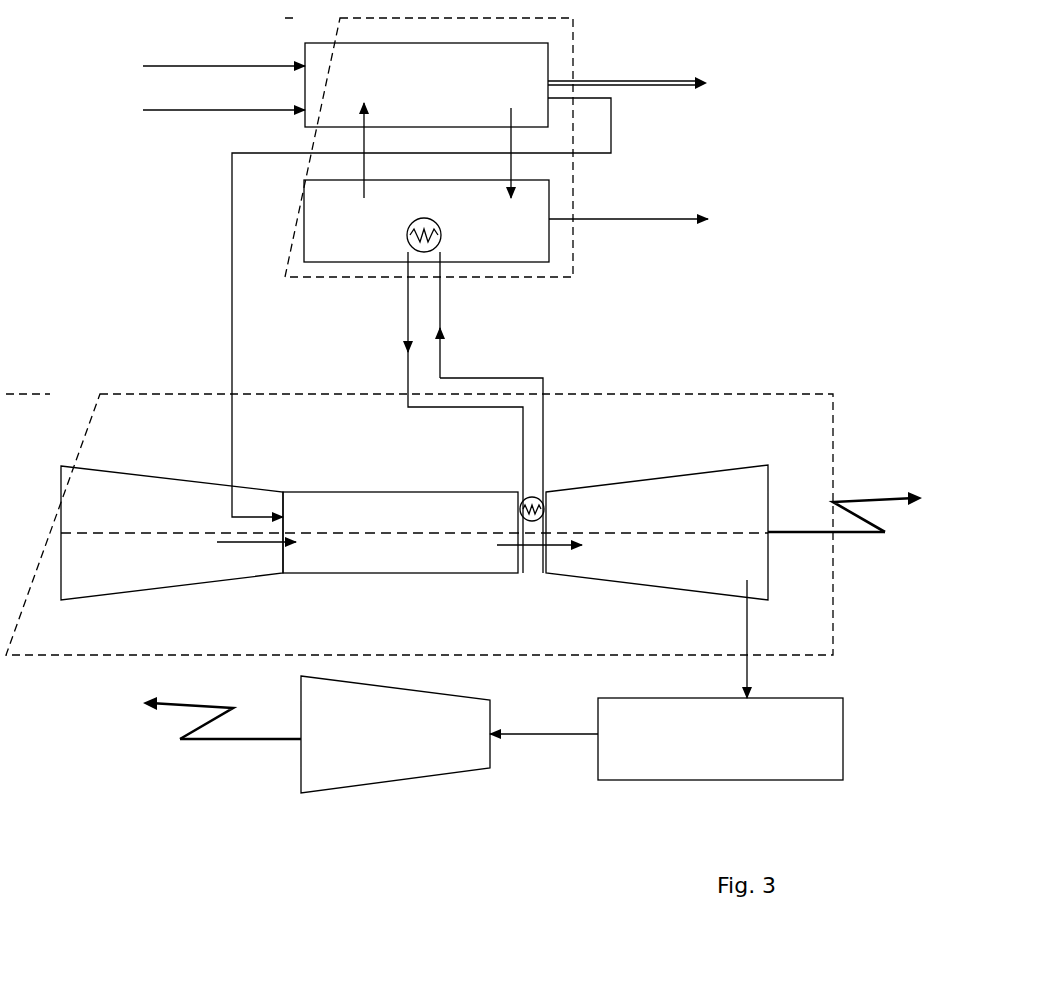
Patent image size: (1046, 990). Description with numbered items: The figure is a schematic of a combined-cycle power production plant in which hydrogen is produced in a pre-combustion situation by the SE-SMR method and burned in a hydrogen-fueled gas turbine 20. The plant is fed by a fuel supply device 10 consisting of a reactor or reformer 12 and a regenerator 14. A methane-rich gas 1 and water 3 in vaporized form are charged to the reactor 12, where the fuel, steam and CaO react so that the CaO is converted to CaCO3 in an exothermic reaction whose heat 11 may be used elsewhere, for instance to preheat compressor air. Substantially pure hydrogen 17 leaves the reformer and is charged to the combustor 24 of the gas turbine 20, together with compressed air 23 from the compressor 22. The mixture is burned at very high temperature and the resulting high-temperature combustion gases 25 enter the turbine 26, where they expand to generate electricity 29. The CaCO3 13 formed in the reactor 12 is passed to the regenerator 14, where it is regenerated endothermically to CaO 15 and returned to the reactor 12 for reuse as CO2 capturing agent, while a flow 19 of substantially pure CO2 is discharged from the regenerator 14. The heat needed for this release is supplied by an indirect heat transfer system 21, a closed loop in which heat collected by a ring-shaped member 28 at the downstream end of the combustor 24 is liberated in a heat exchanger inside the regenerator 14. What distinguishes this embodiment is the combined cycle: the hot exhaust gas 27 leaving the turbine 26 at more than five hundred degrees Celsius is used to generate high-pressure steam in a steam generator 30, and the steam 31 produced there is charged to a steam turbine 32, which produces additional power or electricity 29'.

The methane rich gas 1 is at (224, 53).
The water 3 is at (224, 97).
The fuel supply device 10 is at (429, 142).
The heat 11 is at (627, 73).
The reactor 12 is at (426, 85).
The CaCO3 13 is at (527, 153).
The regenerator 14 is at (426, 221).
The CaO 15 is at (380, 150).
The hydrogen 17 is at (408, 307).
The flow of substantially pure CO2 19 is at (628, 205).
The hydrogen-fueled gas turbine 20 is at (419, 518).
The indirect heat transfer system 21 is at (457, 412).
The compressor 22 is at (172, 533).
The compressed air 23 is at (242, 544).
The combustor 24 is at (400, 532).
The high-temperature combustion gases 25 is at (525, 547).
The turbine 26 is at (657, 532).
The exhaust gas 27 is at (763, 639).
The ring-shaped member 28 is at (538, 565).
The electricity 29 is at (845, 497).
The additional power/electricity 29' is at (218, 726).
The steam generator 30 is at (720, 739).
The steam stream 31 is at (544, 748).
The steam turbine 32 is at (395, 734).